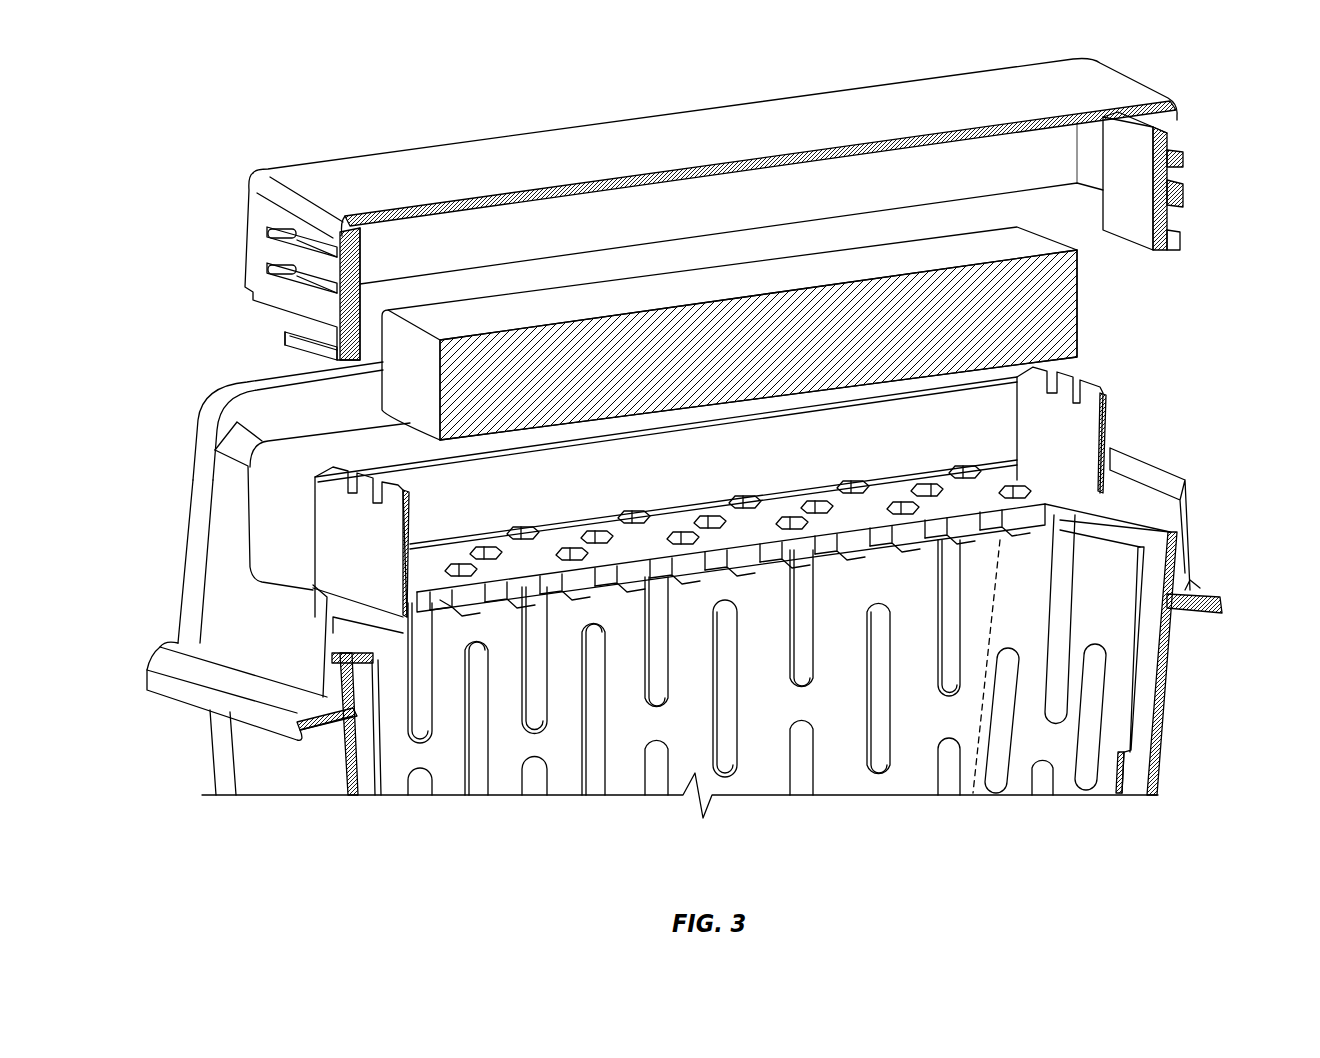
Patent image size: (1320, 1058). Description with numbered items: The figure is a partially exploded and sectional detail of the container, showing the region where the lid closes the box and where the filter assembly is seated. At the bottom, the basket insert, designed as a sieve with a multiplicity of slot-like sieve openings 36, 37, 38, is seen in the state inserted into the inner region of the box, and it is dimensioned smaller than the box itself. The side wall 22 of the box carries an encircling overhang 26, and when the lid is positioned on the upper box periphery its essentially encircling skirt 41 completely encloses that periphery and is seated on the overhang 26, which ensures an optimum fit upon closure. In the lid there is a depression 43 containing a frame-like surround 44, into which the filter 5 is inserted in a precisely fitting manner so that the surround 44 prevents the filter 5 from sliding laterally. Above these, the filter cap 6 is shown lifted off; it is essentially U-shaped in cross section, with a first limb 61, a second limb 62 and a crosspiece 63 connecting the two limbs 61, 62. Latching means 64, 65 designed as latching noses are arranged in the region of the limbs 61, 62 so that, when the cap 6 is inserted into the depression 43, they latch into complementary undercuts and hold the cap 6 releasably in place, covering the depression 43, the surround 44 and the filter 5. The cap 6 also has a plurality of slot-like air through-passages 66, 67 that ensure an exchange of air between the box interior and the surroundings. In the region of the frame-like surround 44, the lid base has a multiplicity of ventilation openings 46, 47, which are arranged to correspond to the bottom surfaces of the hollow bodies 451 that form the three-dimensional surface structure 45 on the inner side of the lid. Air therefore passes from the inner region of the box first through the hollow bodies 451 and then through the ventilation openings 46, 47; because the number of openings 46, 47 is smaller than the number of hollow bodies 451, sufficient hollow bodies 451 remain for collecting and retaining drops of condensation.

The filter 5 is at (738, 340).
The filter cap 6 is at (1030, 60).
The side wall 22 is at (322, 777).
The encircling overhang 26 is at (1215, 590).
The sieve openings 36 is at (590, 745).
The sieve openings 37 is at (725, 718).
The sieve openings 38 is at (878, 710).
The skirt 41 is at (253, 628).
The depression 43 is at (270, 522).
The frame-like surround 44 is at (340, 548).
The three-dimensional surface structure 45 is at (1060, 523).
The ventilation openings 46 is at (533, 583).
The ventilation openings 47 is at (647, 567).
The hollow bodies 451 is at (702, 567).
The first limb 61 is at (265, 209).
The second limb 62 is at (1175, 120).
The crosspiece 63 is at (855, 112).
The latching means 64 is at (307, 345).
The latching means 65 is at (1180, 240).
The air through-passages 66 is at (280, 272).
The air through-passages 67 is at (1178, 178).